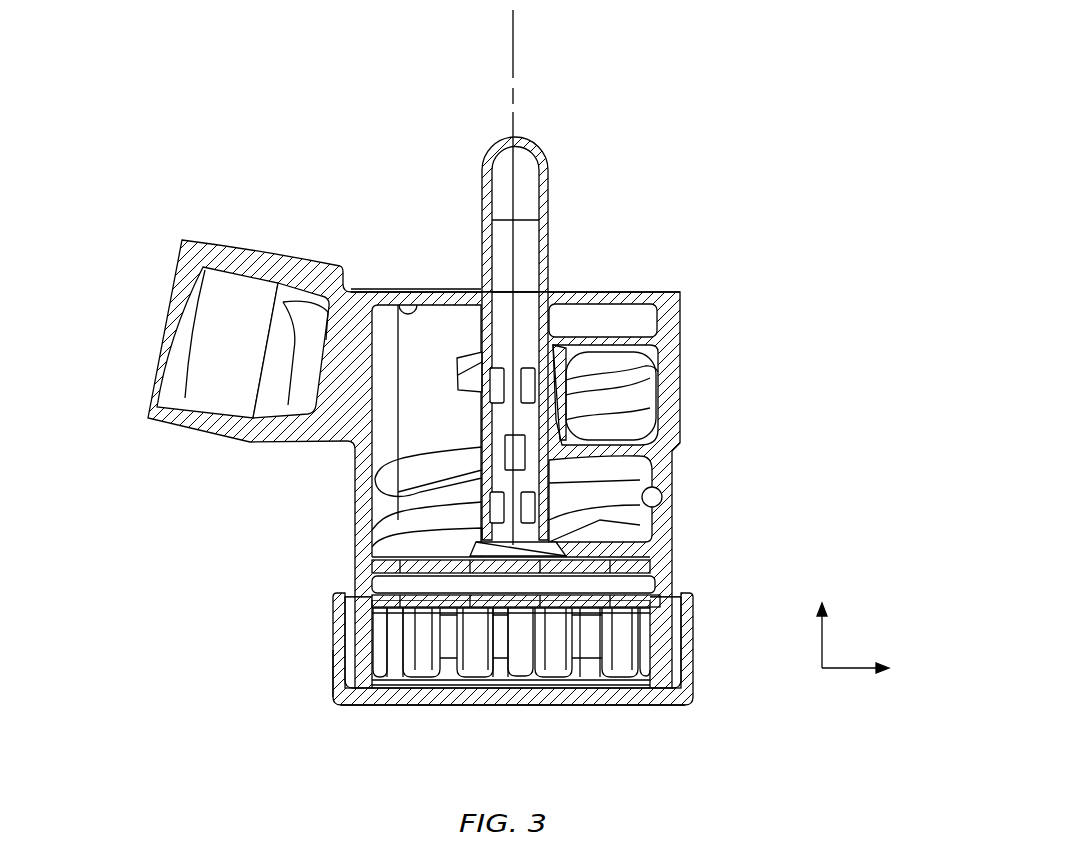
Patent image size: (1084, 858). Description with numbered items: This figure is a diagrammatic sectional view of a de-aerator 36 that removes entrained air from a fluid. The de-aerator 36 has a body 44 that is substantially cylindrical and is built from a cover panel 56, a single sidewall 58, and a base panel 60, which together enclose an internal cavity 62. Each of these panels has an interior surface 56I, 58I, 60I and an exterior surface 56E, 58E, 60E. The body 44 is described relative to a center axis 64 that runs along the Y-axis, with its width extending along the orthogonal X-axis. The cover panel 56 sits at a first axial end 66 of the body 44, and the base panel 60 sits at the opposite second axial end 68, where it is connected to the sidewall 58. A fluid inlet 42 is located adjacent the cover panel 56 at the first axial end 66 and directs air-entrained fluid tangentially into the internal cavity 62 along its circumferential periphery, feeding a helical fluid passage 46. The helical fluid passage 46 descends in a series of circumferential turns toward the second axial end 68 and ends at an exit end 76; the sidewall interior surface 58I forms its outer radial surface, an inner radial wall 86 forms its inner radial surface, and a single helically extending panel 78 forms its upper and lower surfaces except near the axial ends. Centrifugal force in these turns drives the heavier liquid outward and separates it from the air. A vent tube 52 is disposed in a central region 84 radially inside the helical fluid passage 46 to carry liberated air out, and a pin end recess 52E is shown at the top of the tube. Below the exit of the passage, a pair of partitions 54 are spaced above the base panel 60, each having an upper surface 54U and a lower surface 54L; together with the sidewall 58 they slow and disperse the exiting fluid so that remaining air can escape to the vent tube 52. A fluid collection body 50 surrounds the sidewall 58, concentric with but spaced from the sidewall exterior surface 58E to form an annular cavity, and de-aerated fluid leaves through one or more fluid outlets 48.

The de-aerator 36 is at (504, 394).
The fluid inlet 42 is at (176, 335).
The body 44 is at (702, 338).
The helical fluid passage 46 is at (640, 417).
The fluid outlets 48 is at (473, 677).
The fluid collection body 50 is at (708, 677).
The vent tube 52 is at (528, 243).
The pin end recess 52E is at (548, 332).
The partition 54 is at (457, 560).
The upper surface 54U is at (383, 548).
The lower surface 54L is at (378, 588).
The cover panel 56 is at (407, 259).
The exterior surface 56E is at (384, 291).
The interior surface 56I is at (412, 306).
The sidewall 58 is at (672, 498).
The exterior surface 58E is at (672, 458).
The interior surface 58I is at (655, 492).
The base panel 60 is at (520, 729).
The interior surface 60I is at (540, 680).
The exterior surface 60E is at (655, 705).
The internal cavity 62 is at (434, 343).
The center axis 64 is at (515, 23).
The first axial end 66 is at (628, 279).
The second axial end 68 is at (337, 760).
The exit end 76 is at (640, 528).
The helically extending panel 78 is at (372, 481).
The central region 84 is at (578, 371).
The inner radial wall 86 is at (652, 386).